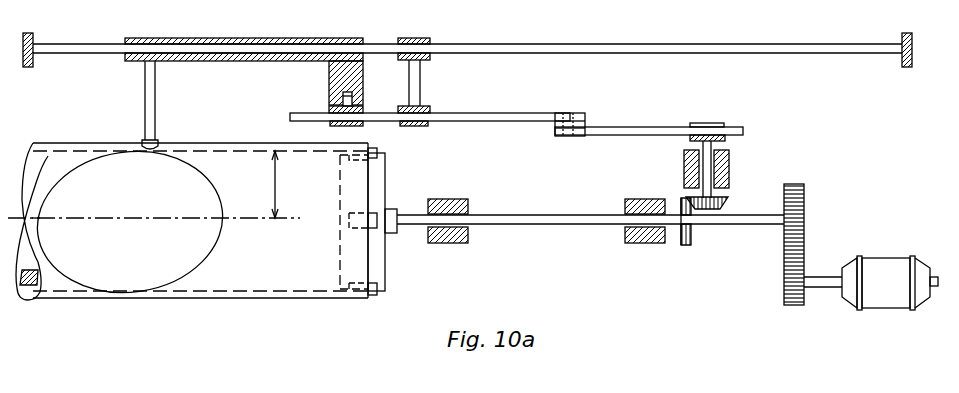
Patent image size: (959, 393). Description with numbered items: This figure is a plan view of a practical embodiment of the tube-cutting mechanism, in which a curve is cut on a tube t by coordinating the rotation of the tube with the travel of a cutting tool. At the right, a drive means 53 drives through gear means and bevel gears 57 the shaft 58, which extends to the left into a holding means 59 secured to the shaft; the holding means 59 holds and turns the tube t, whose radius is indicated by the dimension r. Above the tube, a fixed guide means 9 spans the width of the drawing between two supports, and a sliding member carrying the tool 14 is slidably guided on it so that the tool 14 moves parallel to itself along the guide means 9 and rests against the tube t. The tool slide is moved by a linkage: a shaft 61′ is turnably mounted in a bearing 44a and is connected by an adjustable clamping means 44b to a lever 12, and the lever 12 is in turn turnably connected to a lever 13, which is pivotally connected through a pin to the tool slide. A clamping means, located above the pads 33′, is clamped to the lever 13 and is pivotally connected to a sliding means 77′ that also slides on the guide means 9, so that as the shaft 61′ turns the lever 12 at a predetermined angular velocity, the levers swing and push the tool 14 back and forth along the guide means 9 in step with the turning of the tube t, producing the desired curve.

The guide means 9 is at (726, 44).
The tube t is at (318, 296).
The radius dimension r is at (281, 184).
The tool 14 is at (146, 142).
The holding means 59 is at (380, 273).
The shaft 58 is at (528, 224).
The bevel gears 57 is at (682, 238).
The lever 13 is at (487, 121).
The clamp pads 33′ is at (362, 122).
The sliding means 77′ is at (432, 40).
The lever 12 is at (645, 135).
The adjustable clamping means 44b is at (730, 120).
The shaft 61′ is at (711, 146).
The bearing 44a is at (722, 178).
The drive means 53 is at (887, 267).